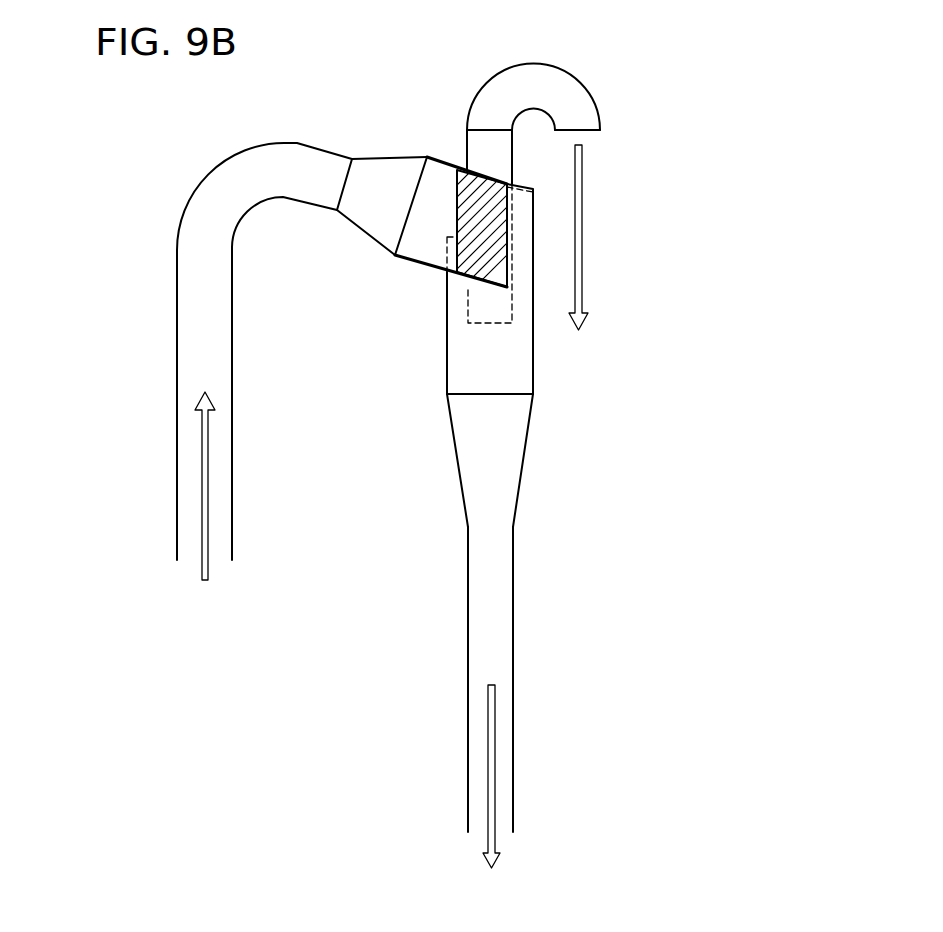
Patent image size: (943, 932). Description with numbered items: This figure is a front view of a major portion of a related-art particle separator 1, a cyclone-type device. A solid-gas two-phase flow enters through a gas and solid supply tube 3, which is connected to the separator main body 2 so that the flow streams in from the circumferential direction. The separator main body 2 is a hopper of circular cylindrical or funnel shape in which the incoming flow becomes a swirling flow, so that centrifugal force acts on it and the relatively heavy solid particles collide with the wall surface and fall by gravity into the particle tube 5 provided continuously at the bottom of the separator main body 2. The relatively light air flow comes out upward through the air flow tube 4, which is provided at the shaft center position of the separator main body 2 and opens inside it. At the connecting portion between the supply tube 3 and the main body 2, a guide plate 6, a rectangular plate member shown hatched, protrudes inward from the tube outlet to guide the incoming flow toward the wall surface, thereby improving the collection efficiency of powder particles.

The particle separator 1 is at (652, 115).
The separator main body 2 is at (447, 362).
The gas and solid supply tube 3 is at (294, 143).
The air flow tube 4 is at (467, 135).
The particle tube 5 is at (513, 660).
The guide plate 6 is at (457, 203).